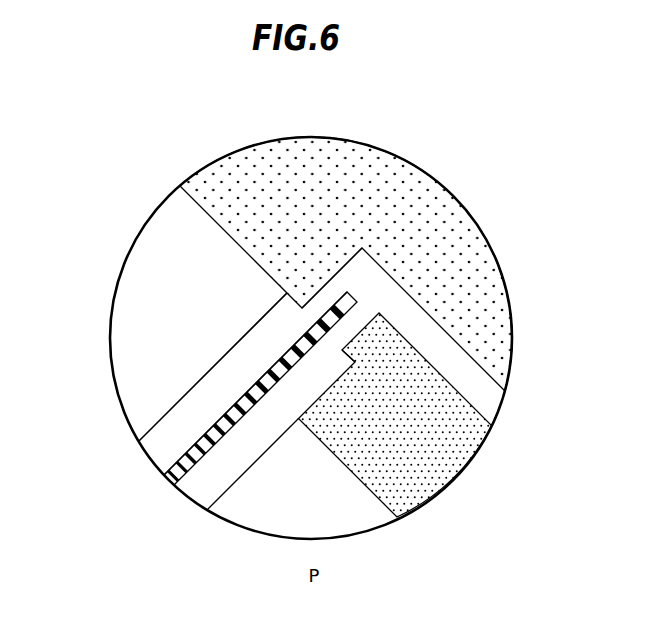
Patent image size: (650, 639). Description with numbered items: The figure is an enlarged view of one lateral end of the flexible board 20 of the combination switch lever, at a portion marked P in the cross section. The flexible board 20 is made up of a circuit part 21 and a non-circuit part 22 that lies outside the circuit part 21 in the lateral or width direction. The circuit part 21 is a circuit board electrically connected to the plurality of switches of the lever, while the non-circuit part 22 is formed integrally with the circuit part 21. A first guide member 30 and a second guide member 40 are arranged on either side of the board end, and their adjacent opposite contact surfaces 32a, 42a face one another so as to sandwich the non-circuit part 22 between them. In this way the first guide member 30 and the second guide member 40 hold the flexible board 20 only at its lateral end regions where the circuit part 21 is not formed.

The flexible board 20 is at (117, 178).
The circuit part 21 is at (198, 440).
The non-circuit part 22 is at (283, 353).
The first guide member 30 is at (438, 195).
The contact surface of first guide member 32a is at (335, 280).
The second guide member 40 is at (463, 452).
The contact surface of second guide member 42a is at (360, 327).